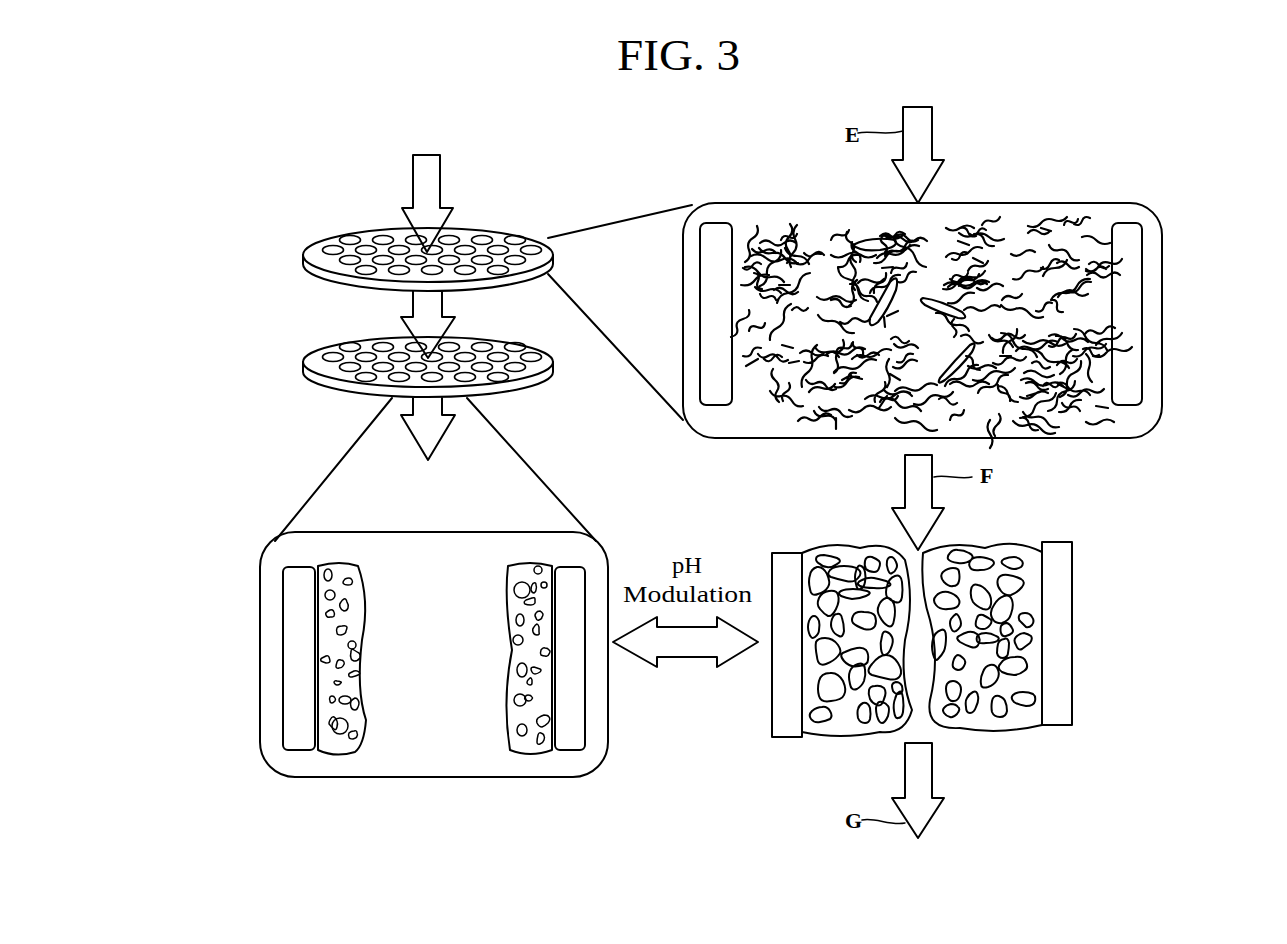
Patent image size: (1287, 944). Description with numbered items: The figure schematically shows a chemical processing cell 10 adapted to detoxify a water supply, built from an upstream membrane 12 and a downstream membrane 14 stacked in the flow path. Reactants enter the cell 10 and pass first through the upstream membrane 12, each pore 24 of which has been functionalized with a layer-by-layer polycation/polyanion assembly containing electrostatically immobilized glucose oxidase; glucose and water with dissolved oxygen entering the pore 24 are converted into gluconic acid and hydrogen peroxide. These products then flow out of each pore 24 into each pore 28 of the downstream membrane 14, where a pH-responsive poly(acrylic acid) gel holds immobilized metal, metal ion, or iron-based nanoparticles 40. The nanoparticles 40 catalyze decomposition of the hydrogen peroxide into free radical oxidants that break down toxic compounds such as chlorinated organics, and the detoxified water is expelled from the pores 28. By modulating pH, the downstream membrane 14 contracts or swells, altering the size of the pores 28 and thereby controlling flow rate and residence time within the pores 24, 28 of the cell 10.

The chemical processing cell 10 is at (516, 188).
The upstream membrane 12 is at (303, 263).
The downstream membrane 14 is at (303, 370).
The pore 24 is at (925, 263).
The pore 28 is at (922, 688).
The nanoparticles 40 is at (360, 588).